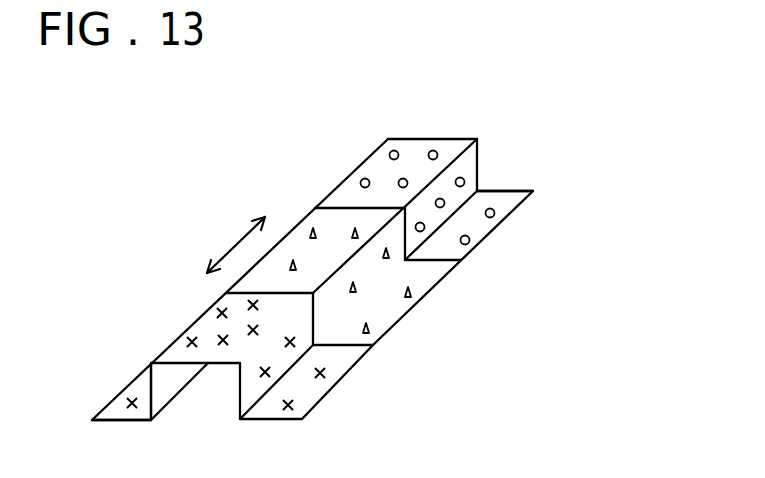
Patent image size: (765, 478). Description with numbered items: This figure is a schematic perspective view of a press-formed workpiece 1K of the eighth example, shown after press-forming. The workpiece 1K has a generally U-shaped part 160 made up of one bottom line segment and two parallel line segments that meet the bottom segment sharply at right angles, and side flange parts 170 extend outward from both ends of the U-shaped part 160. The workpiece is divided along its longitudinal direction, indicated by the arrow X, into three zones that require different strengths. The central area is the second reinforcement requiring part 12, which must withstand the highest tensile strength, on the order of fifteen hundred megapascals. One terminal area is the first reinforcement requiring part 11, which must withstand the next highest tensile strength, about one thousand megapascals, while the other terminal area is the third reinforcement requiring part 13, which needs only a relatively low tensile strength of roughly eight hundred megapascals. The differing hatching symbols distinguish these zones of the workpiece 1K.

The press-formed workpiece 1K is at (484, 147).
The U-shaped part 160 is at (422, 148).
The first reinforcement requiring part 11 is at (501, 264).
The second reinforcement requiring part 12 is at (416, 343).
The third reinforcement requiring part 13 is at (333, 421).
The side flange parts 170 is at (132, 394).
The longitudinal direction arrow X is at (228, 243).